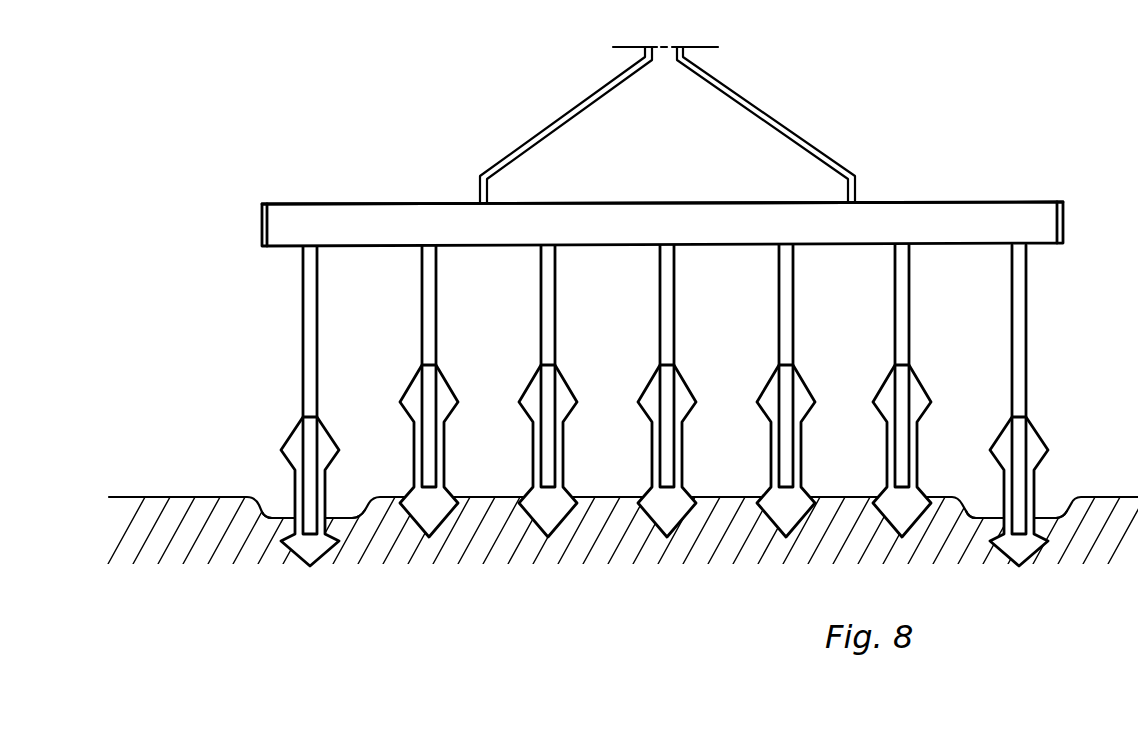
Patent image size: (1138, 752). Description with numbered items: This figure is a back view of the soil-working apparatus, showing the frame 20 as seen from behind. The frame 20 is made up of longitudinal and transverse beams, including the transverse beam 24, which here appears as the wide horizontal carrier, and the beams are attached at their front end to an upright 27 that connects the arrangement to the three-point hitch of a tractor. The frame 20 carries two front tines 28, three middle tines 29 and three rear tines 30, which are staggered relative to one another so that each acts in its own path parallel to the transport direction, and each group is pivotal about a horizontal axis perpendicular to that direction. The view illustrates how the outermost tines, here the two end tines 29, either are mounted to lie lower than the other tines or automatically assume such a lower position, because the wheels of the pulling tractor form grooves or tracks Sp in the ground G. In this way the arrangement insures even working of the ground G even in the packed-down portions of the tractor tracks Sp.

The frame 20 is at (664, 202).
The transverse beam 24 is at (963, 210).
The upright 27 is at (532, 143).
The front tines 28 is at (446, 465).
The middle tines 29 is at (328, 495).
The rear tines 30 is at (565, 462).
The ground G is at (830, 496).
The tractor tracks Sp is at (343, 521).